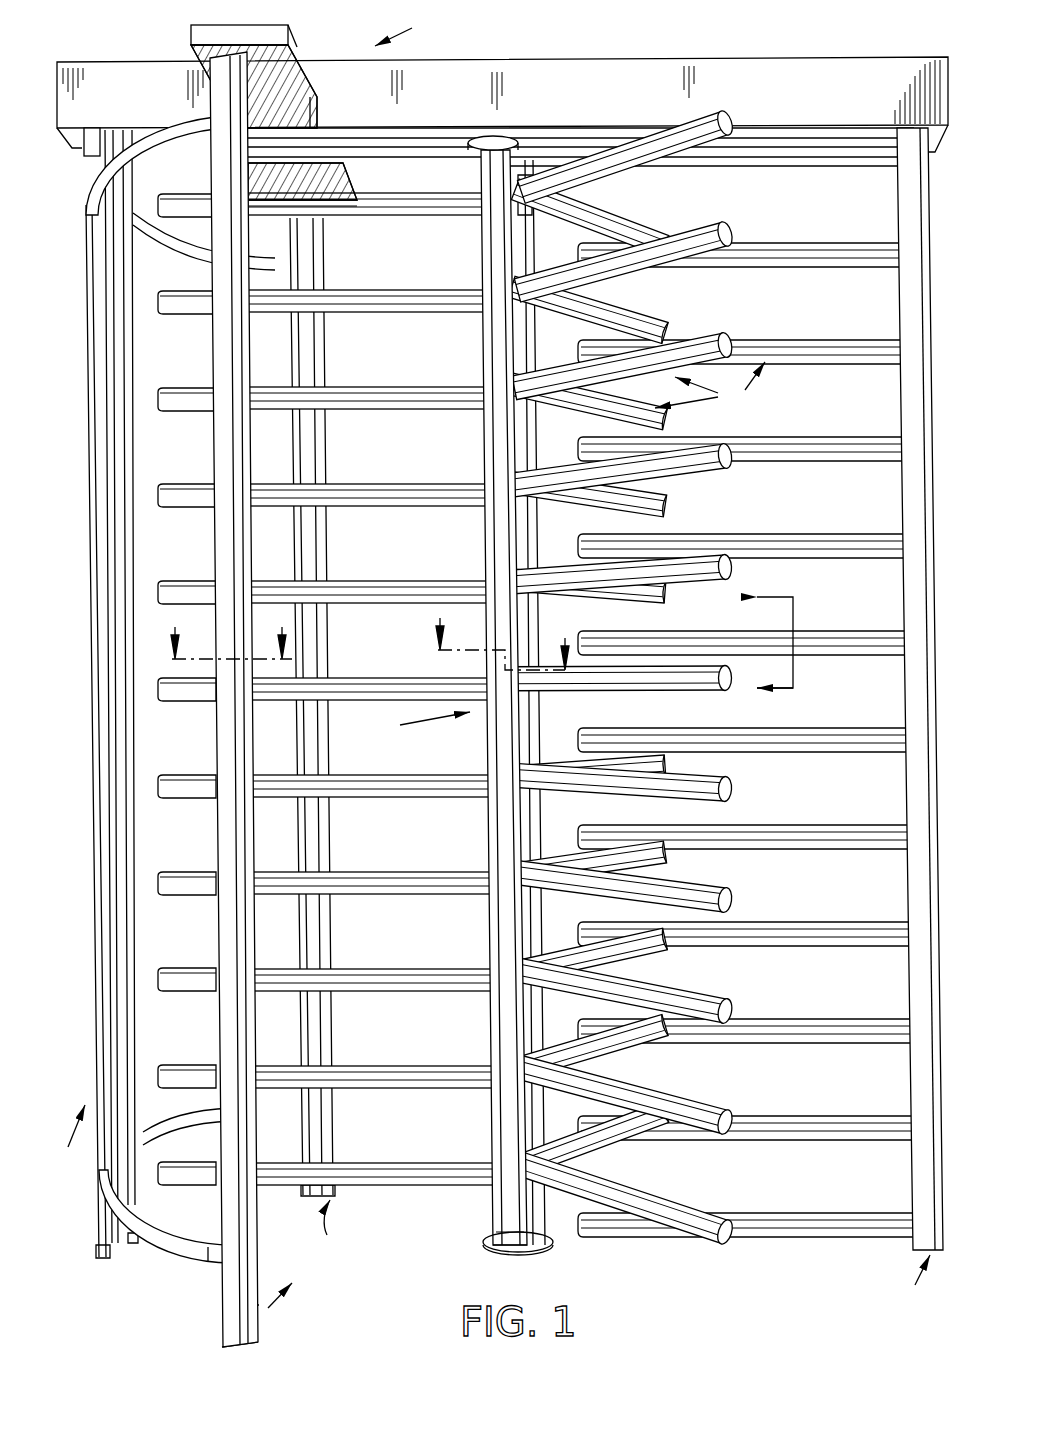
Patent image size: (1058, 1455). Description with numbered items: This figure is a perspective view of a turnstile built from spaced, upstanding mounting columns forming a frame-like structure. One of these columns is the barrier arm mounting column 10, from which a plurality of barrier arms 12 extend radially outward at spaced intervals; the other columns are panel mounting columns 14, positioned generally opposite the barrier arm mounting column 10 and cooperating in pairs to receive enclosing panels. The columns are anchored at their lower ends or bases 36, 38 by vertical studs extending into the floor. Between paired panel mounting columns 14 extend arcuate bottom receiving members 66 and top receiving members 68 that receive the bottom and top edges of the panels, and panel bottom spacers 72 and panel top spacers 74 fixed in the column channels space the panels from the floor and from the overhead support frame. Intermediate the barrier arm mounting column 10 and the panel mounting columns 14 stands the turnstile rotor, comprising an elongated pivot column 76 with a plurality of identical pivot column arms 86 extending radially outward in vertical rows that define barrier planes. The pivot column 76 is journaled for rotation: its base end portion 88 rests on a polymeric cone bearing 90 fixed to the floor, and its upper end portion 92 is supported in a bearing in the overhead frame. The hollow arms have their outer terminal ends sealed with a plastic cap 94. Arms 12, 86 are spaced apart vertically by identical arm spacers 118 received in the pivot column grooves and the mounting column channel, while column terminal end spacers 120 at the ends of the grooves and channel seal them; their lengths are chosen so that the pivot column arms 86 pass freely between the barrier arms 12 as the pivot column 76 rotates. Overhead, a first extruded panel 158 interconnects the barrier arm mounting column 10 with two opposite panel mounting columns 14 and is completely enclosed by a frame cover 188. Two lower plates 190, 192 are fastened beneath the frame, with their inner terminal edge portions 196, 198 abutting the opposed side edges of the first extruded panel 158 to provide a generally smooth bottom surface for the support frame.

The barrier arm mounting column 10 is at (493, 674).
The barrier arms 12 is at (835, 920).
The panel mounting columns 14 is at (318, 648).
The base of barrier arm mounting column 36 is at (920, 1232).
The bases of panel mounting columns 38 is at (98, 1218).
The bottom receiving members 66 is at (178, 1245).
The top receiving members 68 is at (175, 128).
The panel bottom spacers 72 is at (105, 1243).
The panel top spacers 74 is at (82, 157).
The pivot column 76 is at (505, 960).
The pivot column arms 86 is at (350, 495).
The pivot column base end portion 88 is at (507, 1205).
The cone bearing 90 is at (545, 1245).
The pivot column upper end portion 92 is at (482, 172).
The plastic cap 94 is at (732, 1128).
The arm spacers 118 is at (530, 345).
The column terminal end spacers 120 is at (530, 155).
The first extruded panel 158 is at (768, 133).
The frame cover 188 is at (478, 70).
The lower plate 190 is at (275, 62).
The lower plate 192 is at (325, 196).
The inner terminal edge portion 196 is at (298, 120).
The inner terminal edge portion 198 is at (325, 172).